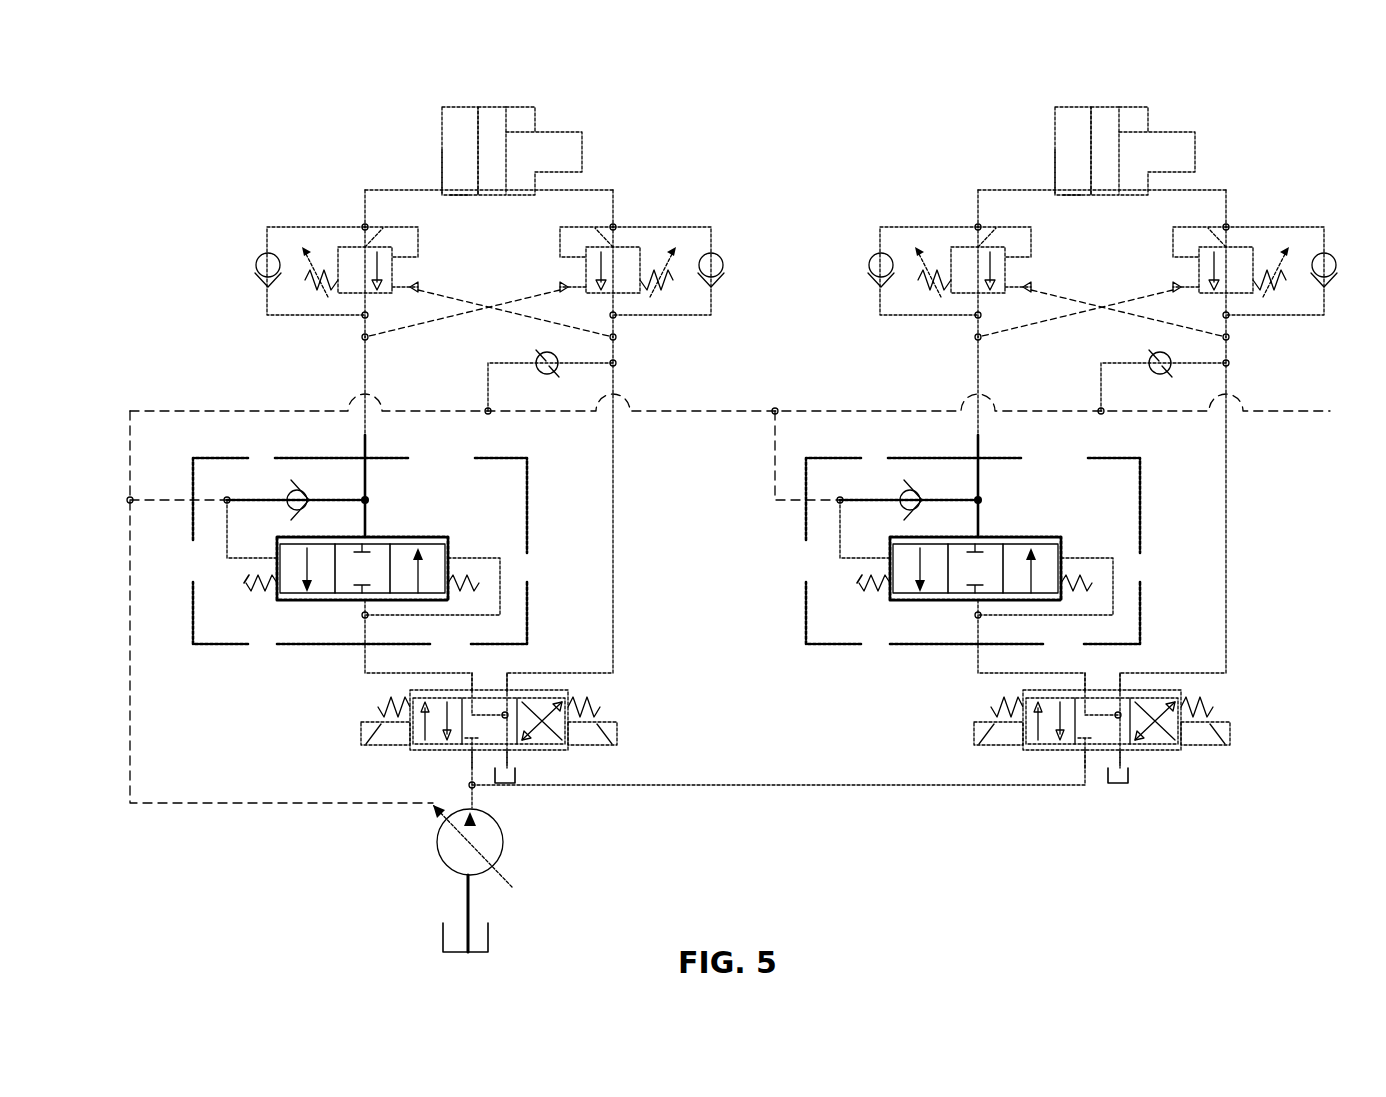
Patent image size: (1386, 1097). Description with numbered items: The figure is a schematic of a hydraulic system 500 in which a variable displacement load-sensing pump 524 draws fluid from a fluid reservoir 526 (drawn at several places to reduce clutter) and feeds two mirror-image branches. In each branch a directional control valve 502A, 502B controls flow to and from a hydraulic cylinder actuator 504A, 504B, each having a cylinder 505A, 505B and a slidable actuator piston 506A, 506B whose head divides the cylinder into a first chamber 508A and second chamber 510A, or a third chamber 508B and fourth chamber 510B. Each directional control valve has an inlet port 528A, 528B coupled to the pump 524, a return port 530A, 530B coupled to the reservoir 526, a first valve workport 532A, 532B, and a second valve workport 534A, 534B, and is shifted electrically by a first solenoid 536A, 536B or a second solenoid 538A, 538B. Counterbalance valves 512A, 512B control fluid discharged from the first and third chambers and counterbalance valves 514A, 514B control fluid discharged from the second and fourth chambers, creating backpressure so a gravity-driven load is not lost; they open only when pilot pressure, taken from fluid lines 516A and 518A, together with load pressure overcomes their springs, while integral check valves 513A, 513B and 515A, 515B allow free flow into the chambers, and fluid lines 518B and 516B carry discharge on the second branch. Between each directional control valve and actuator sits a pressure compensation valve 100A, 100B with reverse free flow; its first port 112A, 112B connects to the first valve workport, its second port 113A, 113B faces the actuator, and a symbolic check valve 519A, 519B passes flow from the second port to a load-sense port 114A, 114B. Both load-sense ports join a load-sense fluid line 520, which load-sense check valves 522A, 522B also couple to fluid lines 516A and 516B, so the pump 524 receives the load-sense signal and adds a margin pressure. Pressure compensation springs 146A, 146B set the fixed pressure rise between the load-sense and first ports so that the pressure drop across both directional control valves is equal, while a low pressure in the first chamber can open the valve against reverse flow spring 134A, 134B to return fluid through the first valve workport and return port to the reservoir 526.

The hydraulic system 500 is at (178, 136).
The load-sense fluid line 520 is at (710, 411).
The variable displacement load-sensing pump 524 is at (438, 845).
The fluid reservoir 526 is at (443, 950).
The hydraulic cylinder actuator 504A is at (438, 125).
The hydraulic cylinder actuator 504B is at (1051, 125).
The cylinder 505A is at (442, 152).
The cylinder 505B is at (1055, 152).
The actuator piston 506A is at (583, 145).
The actuator piston 506B is at (1196, 145).
The second chamber 510A is at (527, 106).
The fourth chamber 510B is at (1140, 106).
The first chamber 508A is at (461, 182).
The third chamber 508B is at (1074, 182).
The counterbalance valve 512A is at (330, 215).
The counterbalance valve 512B is at (928, 215).
The check valve 513A is at (256, 262).
The check valve 513B is at (878, 280).
The counterbalance valve 514A is at (664, 214).
The counterbalance valve 514B is at (1277, 214).
The check valve 515A is at (724, 262).
The check valve 515B is at (1330, 282).
The fluid line 518A is at (365, 372).
The fluid line 518B is at (978, 372).
The fluid line 516A is at (614, 480).
The fluid line 516B is at (1228, 447).
The load-sense check valve 522A is at (548, 376).
The load-sense check valve 522B is at (1161, 376).
The valve 100A is at (203, 650).
The valve 100B is at (816, 650).
The load-sense port 114A is at (226, 496).
The load-sense port 114B is at (839, 496).
The check valve 519A is at (290, 492).
The check valve 519B is at (903, 492).
The second port 113A is at (369, 496).
The second port 113B is at (982, 496).
The reverse flow spring 134A is at (466, 578).
The reverse flow spring 134B is at (1079, 578).
The pressure compensation spring 146A is at (267, 582).
The pressure compensation spring 146B is at (880, 582).
The first port 112A is at (360, 616).
The first port 112B is at (973, 616).
The directional control valve 502A is at (619, 692).
The directional control valve 502B is at (1232, 693).
The first valve workport 532A is at (468, 689).
The first valve workport 532B is at (1081, 689).
The second valve workport 534A is at (510, 689).
The second valve workport 534B is at (1123, 689).
The first solenoid 536A is at (361, 732).
The first solenoid 536B is at (974, 732).
The second solenoid 538A is at (617, 732).
The second solenoid 538B is at (1230, 732).
The inlet port 528A is at (470, 757).
The inlet port 528B is at (1083, 757).
The return port 530A is at (508, 760).
The return port 530B is at (1121, 760).